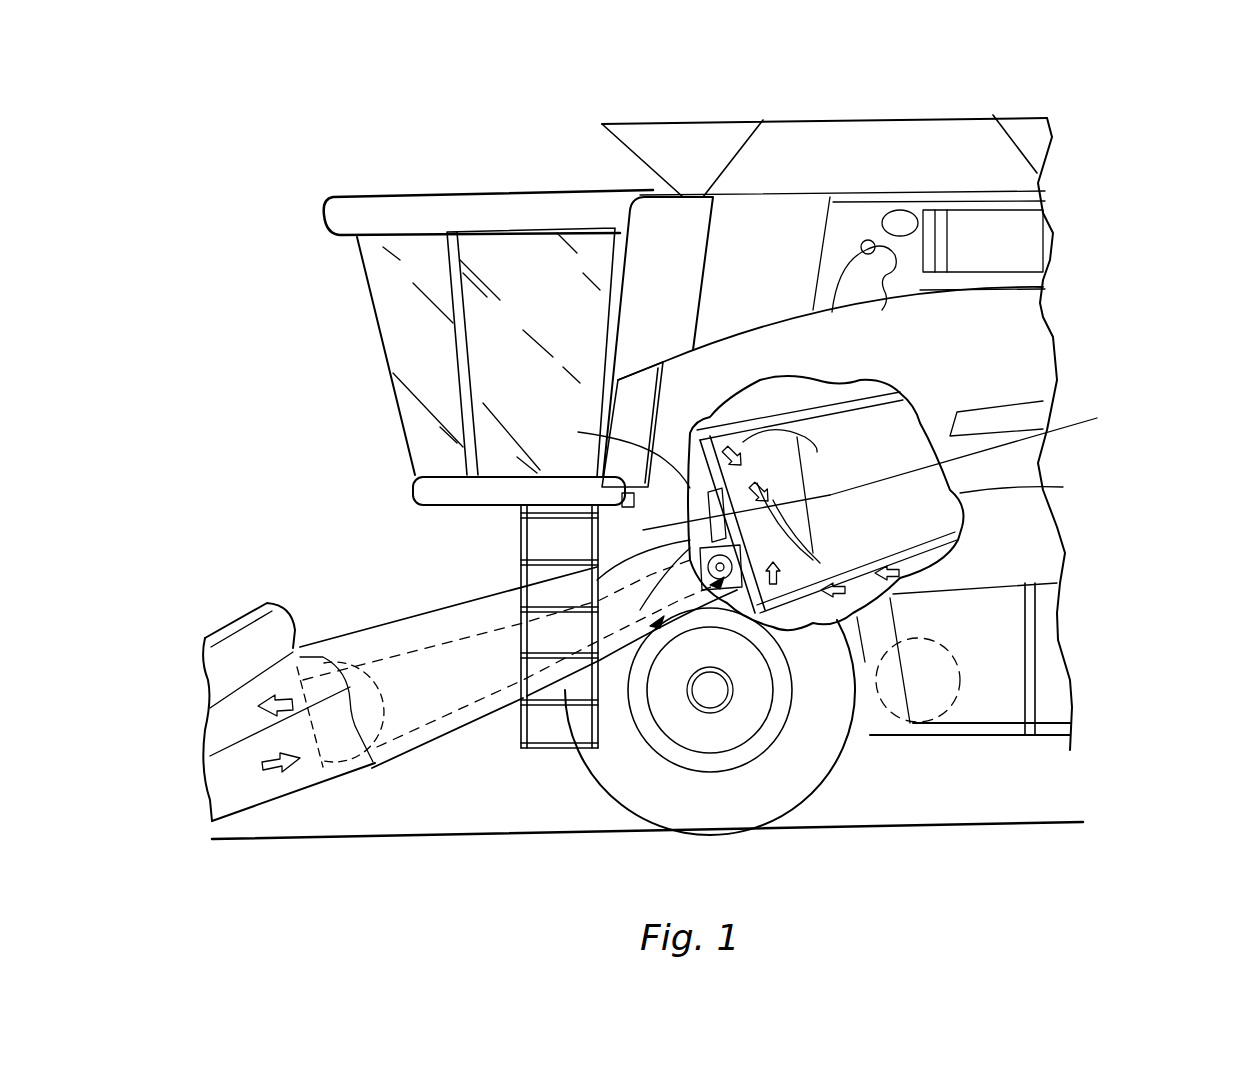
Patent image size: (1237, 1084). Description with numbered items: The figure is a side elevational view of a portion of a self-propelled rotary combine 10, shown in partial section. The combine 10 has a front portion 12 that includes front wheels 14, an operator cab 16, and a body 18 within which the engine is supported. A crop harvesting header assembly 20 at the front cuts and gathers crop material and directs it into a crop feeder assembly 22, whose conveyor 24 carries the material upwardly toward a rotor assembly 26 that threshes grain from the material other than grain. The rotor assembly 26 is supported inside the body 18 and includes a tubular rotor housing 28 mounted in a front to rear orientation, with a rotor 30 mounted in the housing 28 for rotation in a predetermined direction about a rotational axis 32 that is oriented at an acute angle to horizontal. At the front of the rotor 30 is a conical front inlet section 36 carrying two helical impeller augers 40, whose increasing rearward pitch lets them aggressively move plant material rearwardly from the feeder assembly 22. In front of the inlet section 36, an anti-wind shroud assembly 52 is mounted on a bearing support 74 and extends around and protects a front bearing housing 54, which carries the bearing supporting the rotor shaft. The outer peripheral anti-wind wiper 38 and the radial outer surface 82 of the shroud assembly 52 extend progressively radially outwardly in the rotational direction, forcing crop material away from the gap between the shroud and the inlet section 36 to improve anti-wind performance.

The self-propelled rotary combine 10 is at (1112, 138).
The front portion 12 is at (1005, 736).
The front wheels 14 is at (858, 745).
The operator cab 16 is at (385, 357).
The body 18 is at (1050, 317).
The crop harvesting header assembly 20 is at (323, 659).
The crop feeder assembly 22 is at (397, 618).
The conveyor 24 is at (474, 638).
The rotor assembly 26 is at (1030, 487).
The tubular rotor housing 28 is at (847, 390).
The rotor 30 is at (950, 545).
The rotational axis 32 is at (1097, 418).
The front inlet section 36 is at (727, 420).
The anti-wind wiper 38 is at (813, 473).
The radial outer surface 82 is at (831, 523).
The helical impeller augers 40 is at (695, 490).
The anti-wind shroud assembly 52 is at (559, 646).
The front bearing housing 54 is at (614, 452).
The bearing support 74 is at (715, 520).